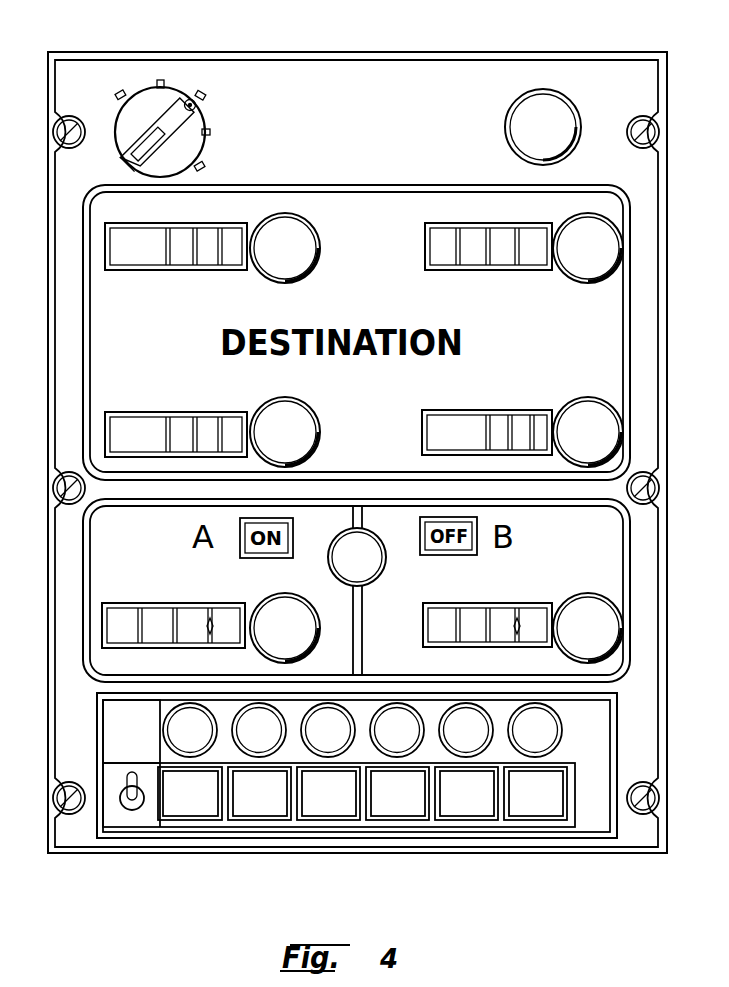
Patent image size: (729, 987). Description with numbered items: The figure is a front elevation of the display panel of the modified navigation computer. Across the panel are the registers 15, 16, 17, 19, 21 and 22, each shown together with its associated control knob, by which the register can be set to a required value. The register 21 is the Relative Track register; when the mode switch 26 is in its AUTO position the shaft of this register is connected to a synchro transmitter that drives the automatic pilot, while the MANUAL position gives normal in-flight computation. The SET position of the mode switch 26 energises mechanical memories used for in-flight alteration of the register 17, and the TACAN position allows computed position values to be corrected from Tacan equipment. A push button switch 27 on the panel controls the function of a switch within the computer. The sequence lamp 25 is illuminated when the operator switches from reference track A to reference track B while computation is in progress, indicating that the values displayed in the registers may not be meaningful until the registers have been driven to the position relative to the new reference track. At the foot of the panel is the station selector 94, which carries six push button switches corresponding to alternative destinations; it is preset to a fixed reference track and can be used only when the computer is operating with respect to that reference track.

The mode switch 26 is at (175, 93).
The sequence lamp 25 is at (545, 100).
The register 21 is at (105, 250).
The register 19 is at (535, 270).
The register 17 is at (105, 435).
The register 16 is at (422, 447).
The register 15 is at (102, 620).
The register 22 is at (535, 650).
The push button switch 27 is at (364, 585).
The station selector 94 is at (585, 825).